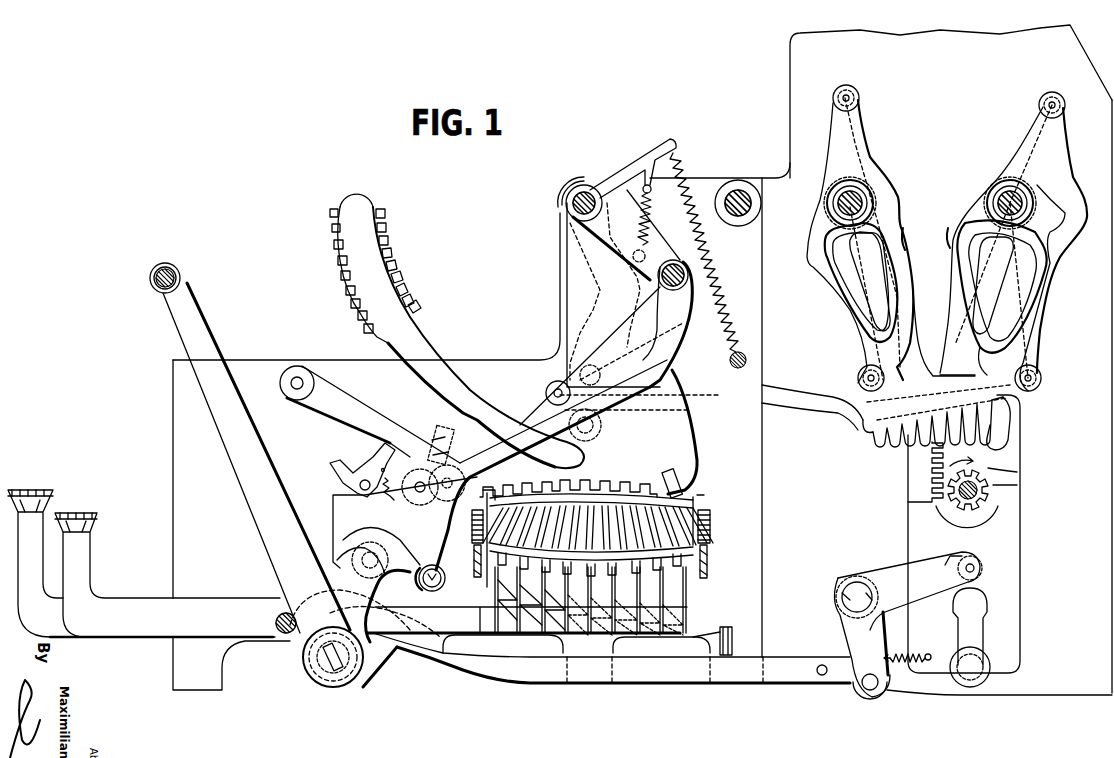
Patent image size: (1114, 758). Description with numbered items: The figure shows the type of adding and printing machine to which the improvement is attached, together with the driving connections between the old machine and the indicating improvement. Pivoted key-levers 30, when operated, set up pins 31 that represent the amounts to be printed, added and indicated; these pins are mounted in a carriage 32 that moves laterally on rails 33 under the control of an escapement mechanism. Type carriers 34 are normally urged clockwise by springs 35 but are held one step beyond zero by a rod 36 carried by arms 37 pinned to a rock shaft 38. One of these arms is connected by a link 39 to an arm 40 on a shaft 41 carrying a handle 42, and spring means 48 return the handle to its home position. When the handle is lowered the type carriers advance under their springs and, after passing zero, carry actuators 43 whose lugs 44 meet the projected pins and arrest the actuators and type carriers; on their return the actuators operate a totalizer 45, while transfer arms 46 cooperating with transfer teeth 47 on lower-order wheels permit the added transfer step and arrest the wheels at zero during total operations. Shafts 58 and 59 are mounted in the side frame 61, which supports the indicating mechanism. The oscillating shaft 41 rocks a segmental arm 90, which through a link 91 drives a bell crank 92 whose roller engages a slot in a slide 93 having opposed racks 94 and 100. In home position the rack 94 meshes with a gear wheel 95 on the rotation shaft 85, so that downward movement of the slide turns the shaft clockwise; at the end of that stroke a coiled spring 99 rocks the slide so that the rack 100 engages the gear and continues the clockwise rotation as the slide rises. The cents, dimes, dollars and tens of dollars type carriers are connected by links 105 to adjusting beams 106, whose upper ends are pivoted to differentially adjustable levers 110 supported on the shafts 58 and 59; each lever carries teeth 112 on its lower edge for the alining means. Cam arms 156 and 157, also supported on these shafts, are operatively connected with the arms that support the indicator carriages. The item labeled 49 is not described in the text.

The key-levers 30 is at (85, 544).
The pins 31 is at (690, 568).
The carriage 32 is at (697, 497).
The rails 33 is at (708, 555).
The type carriers 34 is at (425, 345).
The springs 35 is at (685, 168).
The rod 36 is at (562, 388).
The arms 37 is at (650, 240).
The rock shaft 38 is at (575, 198).
The link 39 is at (528, 425).
The arm 40 is at (355, 533).
The shaft 41 is at (322, 672).
The handle 42 is at (180, 323).
The actuators 43 is at (692, 445).
The lugs 44 is at (672, 478).
The totalizer 45 is at (420, 505).
The transfer arms 46 is at (370, 414).
The transfer teeth 47 is at (410, 455).
The spring means 48 is at (415, 565).
The hook 49 is at (377, 592).
The shaft 58 is at (846, 197).
The shaft 59 is at (1003, 190).
The side frame 61 is at (805, 72).
The rotation shaft 85 is at (976, 504).
The segmental arm 90 is at (338, 523).
The link 91 is at (662, 678).
The bell crank 92 is at (892, 572).
The slide 93 is at (1010, 533).
The rack 94 is at (1020, 490).
The gear wheel 95 is at (1017, 472).
The coiled spring 99 is at (906, 648).
The rack 100 is at (908, 487).
The links 105 is at (712, 395).
The adjusting beams 106 is at (887, 182).
The differentially adjustable levers 110 is at (838, 147).
The teeth 112 is at (872, 452).
The cam arm 156 is at (907, 222).
The cam arm 157 is at (950, 235).